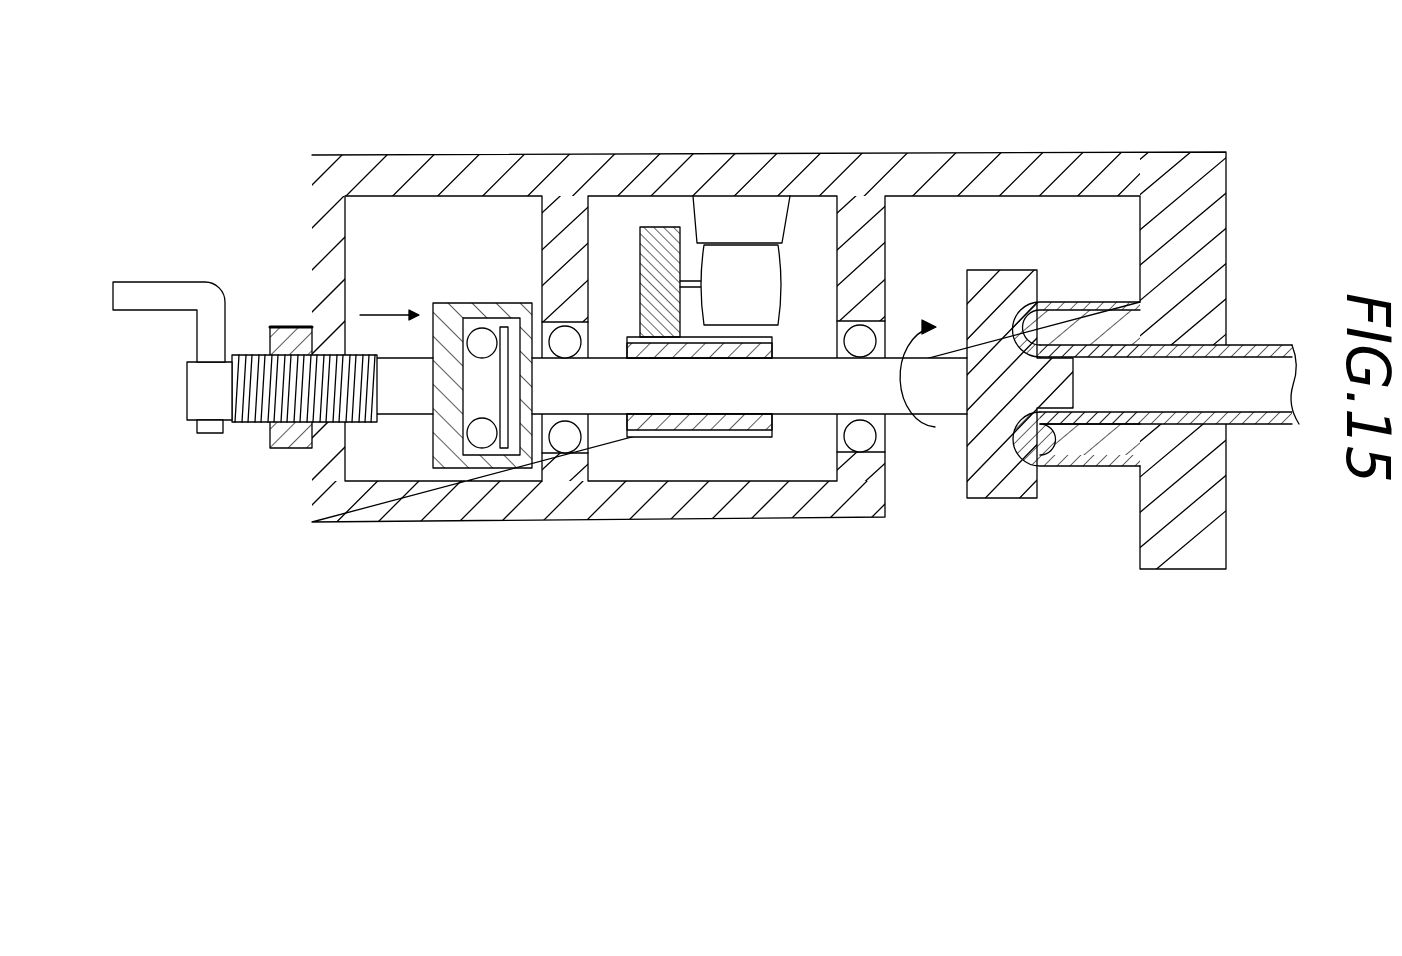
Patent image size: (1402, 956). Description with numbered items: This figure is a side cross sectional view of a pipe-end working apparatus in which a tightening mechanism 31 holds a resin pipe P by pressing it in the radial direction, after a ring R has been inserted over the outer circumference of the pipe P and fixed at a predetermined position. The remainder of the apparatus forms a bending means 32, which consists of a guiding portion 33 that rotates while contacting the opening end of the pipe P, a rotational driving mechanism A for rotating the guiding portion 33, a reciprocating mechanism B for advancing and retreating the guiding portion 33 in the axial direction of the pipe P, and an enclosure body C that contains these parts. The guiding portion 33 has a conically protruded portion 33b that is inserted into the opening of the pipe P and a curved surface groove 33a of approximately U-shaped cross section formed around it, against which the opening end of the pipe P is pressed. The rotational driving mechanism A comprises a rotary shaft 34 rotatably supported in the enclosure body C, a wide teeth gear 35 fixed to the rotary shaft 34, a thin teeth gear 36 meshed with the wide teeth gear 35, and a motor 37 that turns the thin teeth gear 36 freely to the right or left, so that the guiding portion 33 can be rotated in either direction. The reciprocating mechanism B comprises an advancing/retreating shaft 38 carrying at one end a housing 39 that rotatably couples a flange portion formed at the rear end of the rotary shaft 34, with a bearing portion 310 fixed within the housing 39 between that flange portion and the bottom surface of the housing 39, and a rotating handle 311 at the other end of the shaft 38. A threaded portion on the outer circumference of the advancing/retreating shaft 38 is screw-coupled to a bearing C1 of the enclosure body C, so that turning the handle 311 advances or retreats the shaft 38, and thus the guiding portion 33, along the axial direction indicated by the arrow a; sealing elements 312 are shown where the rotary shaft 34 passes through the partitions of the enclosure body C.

The tightening mechanism 31 is at (1158, 635).
The bending means 32 is at (777, 657).
The guiding portion 33 is at (967, 490).
The curved surface groove 33a is at (1138, 395).
The conically protruded portion 33b is at (1013, 553).
The rotary shaft 34 is at (933, 347).
The wide teeth gear 35 is at (725, 562).
The thin teeth gear 36 is at (640, 242).
The motor 37 is at (738, 262).
The advancing/retreating shaft 38 is at (232, 490).
The housing 39 is at (438, 560).
The bearing portion 310 is at (480, 332).
The rotating handle 311 is at (153, 347).
The O-ring 312 is at (918, 232).
The rotational driving mechanism A is at (668, 132).
The reciprocating mechanism B is at (410, 128).
The enclosure body C is at (347, 562).
The bearing C1 is at (284, 325).
The ring R is at (1112, 547).
The resin pipe P is at (1318, 482).
The direction a is at (389, 301).